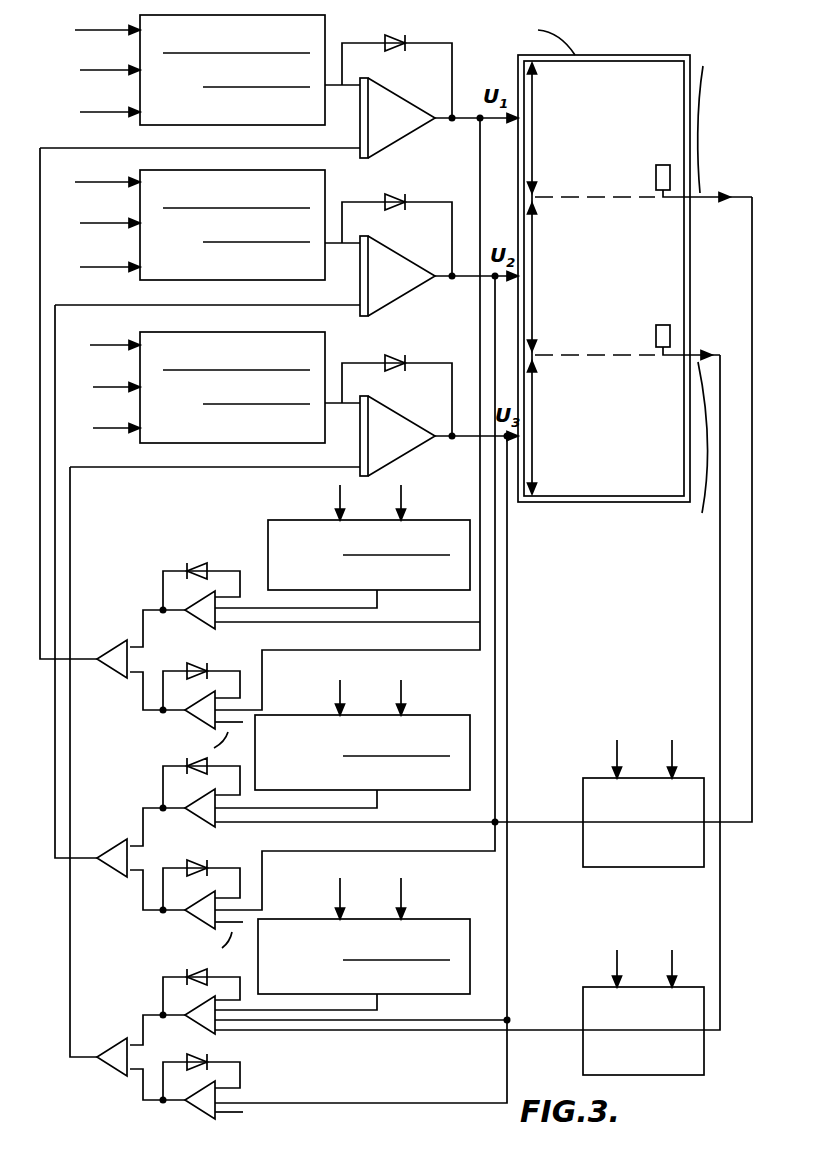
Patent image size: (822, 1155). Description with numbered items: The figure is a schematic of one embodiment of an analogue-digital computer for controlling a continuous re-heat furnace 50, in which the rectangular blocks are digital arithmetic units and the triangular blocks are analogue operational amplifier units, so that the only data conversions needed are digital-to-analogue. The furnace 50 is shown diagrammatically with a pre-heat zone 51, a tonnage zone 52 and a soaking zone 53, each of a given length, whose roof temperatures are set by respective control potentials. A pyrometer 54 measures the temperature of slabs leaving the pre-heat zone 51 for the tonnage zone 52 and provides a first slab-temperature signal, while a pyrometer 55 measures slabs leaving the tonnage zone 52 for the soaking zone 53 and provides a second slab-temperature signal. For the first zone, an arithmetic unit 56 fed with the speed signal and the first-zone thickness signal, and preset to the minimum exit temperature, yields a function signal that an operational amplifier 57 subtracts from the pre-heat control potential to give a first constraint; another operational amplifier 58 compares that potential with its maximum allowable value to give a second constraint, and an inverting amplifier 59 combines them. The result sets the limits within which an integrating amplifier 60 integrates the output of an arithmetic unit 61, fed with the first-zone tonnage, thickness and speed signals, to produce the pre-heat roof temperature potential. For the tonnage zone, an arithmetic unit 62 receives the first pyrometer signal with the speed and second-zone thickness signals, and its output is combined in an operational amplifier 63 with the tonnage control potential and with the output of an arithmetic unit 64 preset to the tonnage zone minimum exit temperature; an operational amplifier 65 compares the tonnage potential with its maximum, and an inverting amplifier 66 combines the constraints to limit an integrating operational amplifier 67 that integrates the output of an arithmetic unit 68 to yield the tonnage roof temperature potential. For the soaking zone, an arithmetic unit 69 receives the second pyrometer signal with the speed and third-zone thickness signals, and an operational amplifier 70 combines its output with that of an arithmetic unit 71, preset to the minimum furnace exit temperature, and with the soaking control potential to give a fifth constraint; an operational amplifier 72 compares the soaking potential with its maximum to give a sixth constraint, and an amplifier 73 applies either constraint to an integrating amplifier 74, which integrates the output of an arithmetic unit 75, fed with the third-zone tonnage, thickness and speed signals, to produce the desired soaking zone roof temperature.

The continuous re-heat furnace 50 is at (515, 86).
The pre-heat zone 51 is at (607, 72).
The tonnage zone 52 is at (676, 265).
The soaking zone 53 is at (577, 484).
The pyrometer 54 is at (656, 178).
The pyrometer 55 is at (670, 337).
The arithmetic unit 56 is at (268, 540).
The operational amplifier 57 is at (200, 618).
The operational amplifier 58 is at (195, 713).
The inverting amplifier 59 is at (115, 659).
The integrating amplifier 60 is at (400, 102).
The arithmetic unit 61 is at (328, 38).
The arithmetic unit 62 is at (637, 867).
The operational amplifier 63 is at (200, 814).
The arithmetic unit 64 is at (292, 715).
The operational amplifier 65 is at (192, 914).
The inverting amplifier 66 is at (118, 870).
The integrating operational amplifier 67 is at (400, 260).
The arithmetic unit 68 is at (328, 194).
The arithmetic unit 69 is at (616, 1075).
The operational amplifier 70 is at (200, 1024).
The arithmetic unit 71 is at (462, 919).
The operational amplifier 72 is at (208, 1098).
The amplifier 73 is at (115, 1056).
The integrating amplifier 74 is at (398, 420).
The arithmetic unit 75 is at (328, 356).